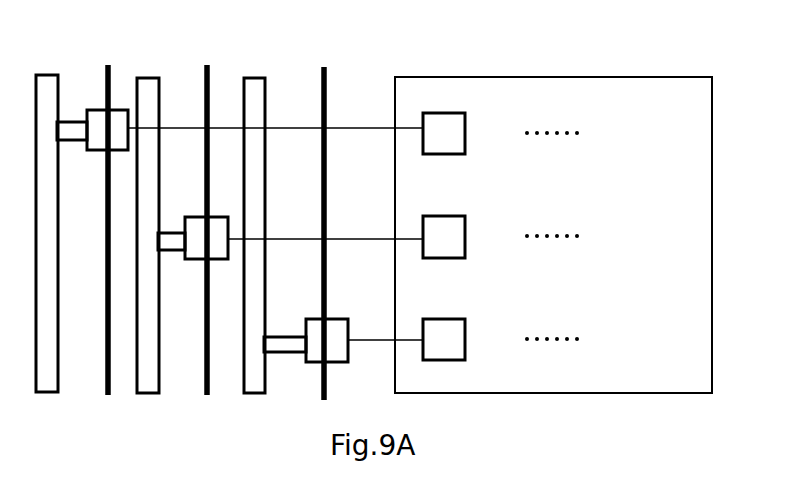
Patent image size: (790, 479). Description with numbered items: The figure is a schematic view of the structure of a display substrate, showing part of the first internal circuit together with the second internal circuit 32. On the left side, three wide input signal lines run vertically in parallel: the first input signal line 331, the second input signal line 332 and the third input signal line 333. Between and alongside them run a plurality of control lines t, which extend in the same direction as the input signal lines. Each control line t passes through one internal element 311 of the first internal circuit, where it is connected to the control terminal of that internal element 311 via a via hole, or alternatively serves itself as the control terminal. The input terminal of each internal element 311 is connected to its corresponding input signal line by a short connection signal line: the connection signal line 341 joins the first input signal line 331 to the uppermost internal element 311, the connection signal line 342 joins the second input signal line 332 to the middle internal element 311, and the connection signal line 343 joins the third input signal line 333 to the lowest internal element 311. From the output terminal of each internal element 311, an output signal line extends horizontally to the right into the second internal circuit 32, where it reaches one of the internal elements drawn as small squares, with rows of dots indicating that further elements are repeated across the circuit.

The second internal circuit 32 is at (552, 77).
The internal element 311 is at (217, 236).
The first input signal line 331 is at (47, 75).
The second input signal line 332 is at (143, 78).
The third input signal line 333 is at (250, 78).
The connection signal line 341 is at (62, 121).
The connection signal line 342 is at (160, 232).
The connection signal line 343 is at (277, 333).
The control line t is at (108, 65).